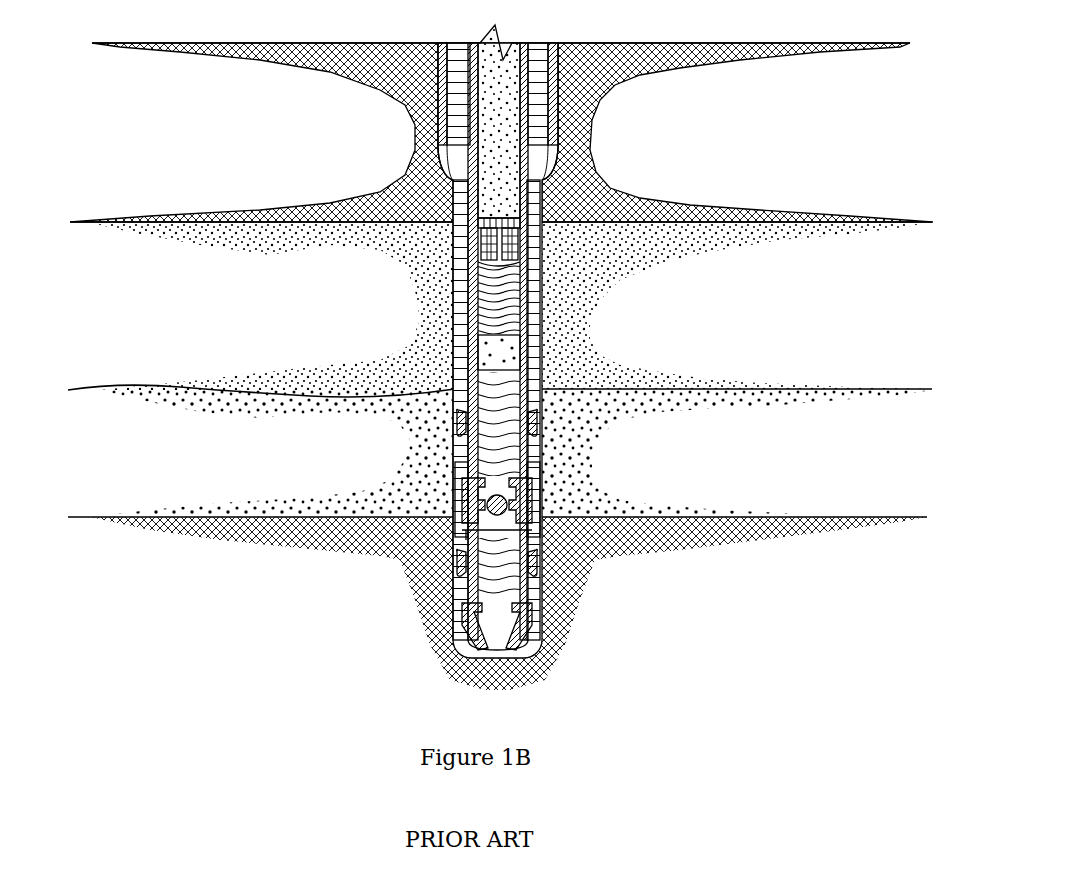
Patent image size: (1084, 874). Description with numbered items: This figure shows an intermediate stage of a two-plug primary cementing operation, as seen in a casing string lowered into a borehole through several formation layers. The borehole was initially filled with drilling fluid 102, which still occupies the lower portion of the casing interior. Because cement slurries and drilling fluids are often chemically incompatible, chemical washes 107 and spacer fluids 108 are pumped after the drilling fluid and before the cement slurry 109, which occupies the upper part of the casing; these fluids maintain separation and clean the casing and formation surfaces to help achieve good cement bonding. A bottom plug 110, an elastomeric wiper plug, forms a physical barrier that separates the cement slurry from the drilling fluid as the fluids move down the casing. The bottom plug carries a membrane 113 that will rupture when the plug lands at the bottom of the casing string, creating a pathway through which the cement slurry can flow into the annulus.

The drilling fluid 102 is at (508, 452).
The chemical washes 107 is at (518, 355).
The spacer fluids 108 is at (477, 293).
The cement slurry 109 is at (498, 132).
The bottom plug 110 is at (518, 256).
The membrane 113 is at (507, 215).